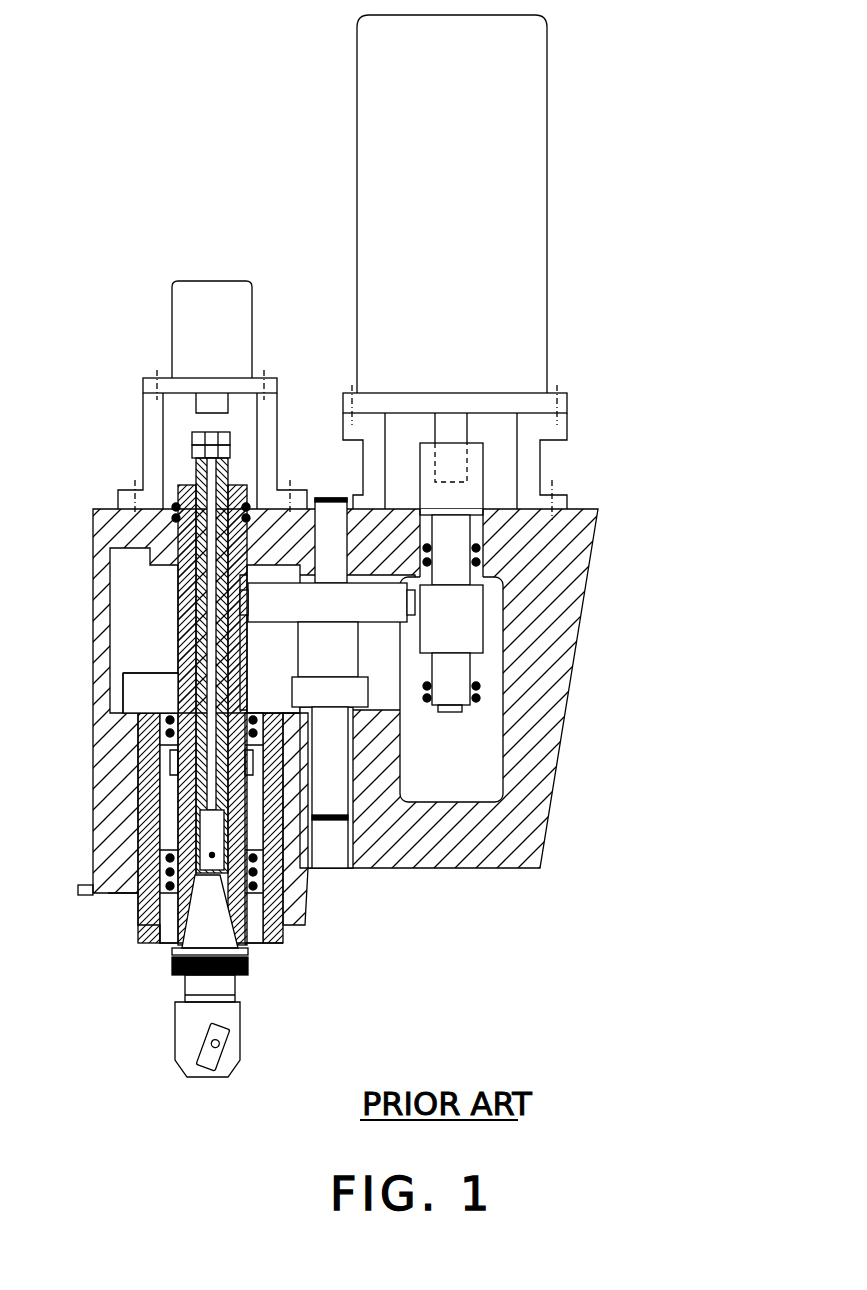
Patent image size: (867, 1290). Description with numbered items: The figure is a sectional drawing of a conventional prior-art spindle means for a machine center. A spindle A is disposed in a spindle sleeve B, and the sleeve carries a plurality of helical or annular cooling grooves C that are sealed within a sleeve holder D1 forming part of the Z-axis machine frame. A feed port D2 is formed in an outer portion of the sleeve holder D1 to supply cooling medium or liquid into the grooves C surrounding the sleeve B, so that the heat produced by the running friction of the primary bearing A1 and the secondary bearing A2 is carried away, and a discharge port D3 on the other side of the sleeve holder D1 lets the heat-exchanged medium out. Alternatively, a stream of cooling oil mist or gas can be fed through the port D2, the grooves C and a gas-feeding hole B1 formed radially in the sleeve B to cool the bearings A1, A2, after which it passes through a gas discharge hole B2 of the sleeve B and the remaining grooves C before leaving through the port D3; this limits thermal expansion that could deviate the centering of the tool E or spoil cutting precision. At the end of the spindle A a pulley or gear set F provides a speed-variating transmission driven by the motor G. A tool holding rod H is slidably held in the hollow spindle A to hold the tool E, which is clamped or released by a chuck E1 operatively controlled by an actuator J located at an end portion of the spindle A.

The spindle A is at (170, 946).
The primary bearing A1 is at (125, 912).
The secondary bearing A2 is at (130, 725).
The spindle sleeve B is at (290, 905).
The gas-feeding hole B1 is at (280, 820).
The gas discharge hole B2 is at (172, 695).
The cooling grooves C is at (140, 793).
The sleeve holder D1 is at (128, 768).
The feed port D2 is at (76, 893).
The discharge port D3 is at (296, 742).
The tool E is at (230, 1015).
The chuck E1 is at (202, 975).
The gear set F is at (172, 657).
The motor G is at (535, 355).
The tool holding rod H is at (205, 487).
The actuator J is at (178, 341).